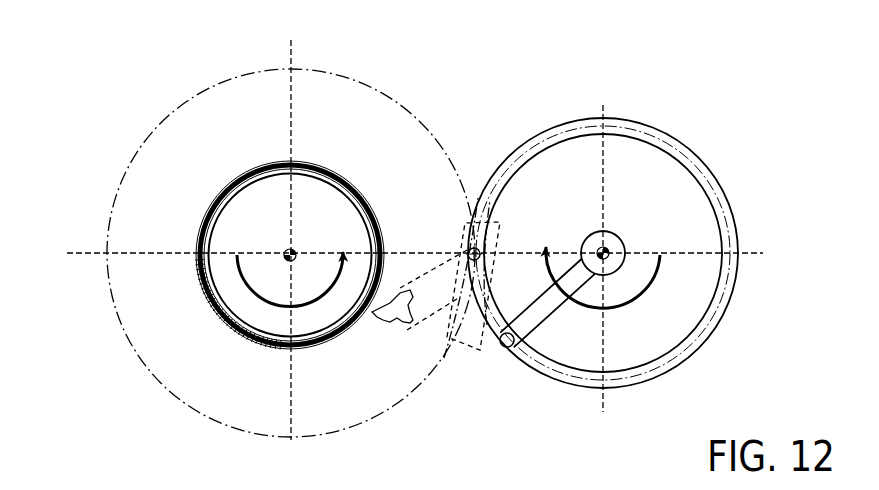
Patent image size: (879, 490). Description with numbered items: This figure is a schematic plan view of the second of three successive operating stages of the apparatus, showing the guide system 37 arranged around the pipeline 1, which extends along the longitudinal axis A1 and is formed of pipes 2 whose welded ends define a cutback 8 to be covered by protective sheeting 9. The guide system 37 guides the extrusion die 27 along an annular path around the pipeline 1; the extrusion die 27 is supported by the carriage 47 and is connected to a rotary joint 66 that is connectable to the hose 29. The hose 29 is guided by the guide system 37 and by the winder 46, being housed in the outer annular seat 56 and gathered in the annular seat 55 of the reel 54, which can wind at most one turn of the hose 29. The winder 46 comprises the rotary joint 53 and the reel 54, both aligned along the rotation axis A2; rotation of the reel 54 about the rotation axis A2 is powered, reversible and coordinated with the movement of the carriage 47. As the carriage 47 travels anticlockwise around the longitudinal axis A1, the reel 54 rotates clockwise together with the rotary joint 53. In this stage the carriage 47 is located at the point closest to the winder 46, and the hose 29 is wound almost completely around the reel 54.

The pipeline 1 is at (256, 163).
The pipe 2 is at (228, 202).
The cutback 8 is at (371, 188).
The protective sheeting 9 is at (278, 353).
The extrusion die 27 is at (393, 322).
The hose 29 is at (674, 142).
The guide system 37 is at (120, 176).
The winder 46 is at (722, 160).
The carriage 47 is at (455, 352).
The rotary joint 53 is at (588, 230).
The reel 54 is at (687, 282).
The annular seat 55 is at (487, 322).
The outer annular seat 56 is at (334, 71).
The rotary joint 66 is at (466, 249).
The longitudinal axis A1 is at (293, 252).
The rotation axis A2 is at (606, 250).